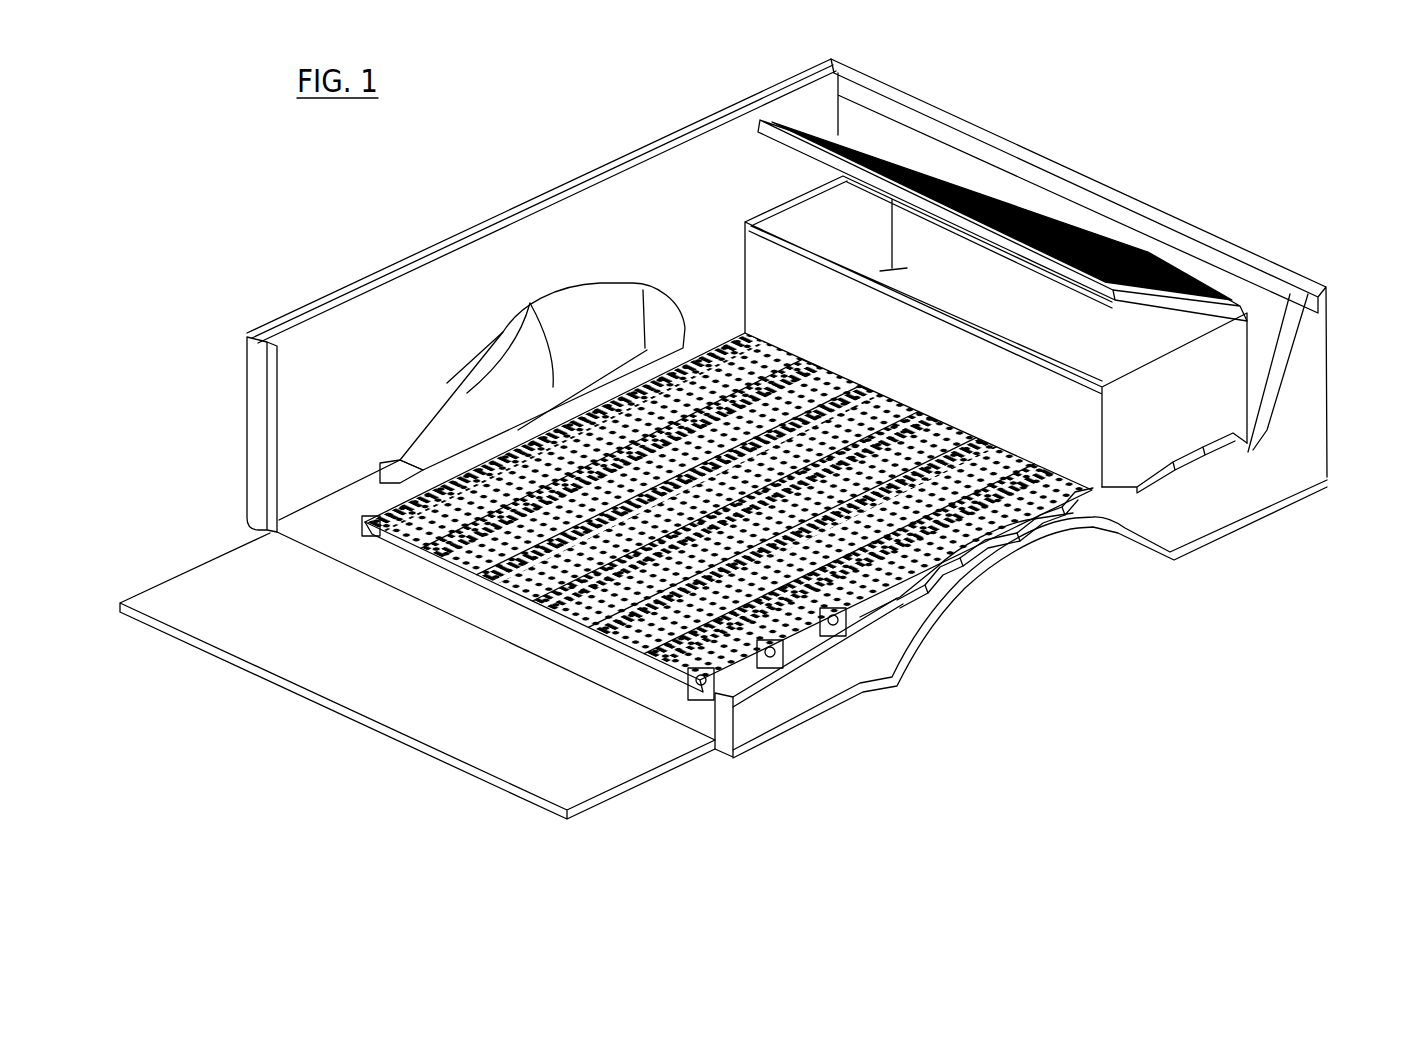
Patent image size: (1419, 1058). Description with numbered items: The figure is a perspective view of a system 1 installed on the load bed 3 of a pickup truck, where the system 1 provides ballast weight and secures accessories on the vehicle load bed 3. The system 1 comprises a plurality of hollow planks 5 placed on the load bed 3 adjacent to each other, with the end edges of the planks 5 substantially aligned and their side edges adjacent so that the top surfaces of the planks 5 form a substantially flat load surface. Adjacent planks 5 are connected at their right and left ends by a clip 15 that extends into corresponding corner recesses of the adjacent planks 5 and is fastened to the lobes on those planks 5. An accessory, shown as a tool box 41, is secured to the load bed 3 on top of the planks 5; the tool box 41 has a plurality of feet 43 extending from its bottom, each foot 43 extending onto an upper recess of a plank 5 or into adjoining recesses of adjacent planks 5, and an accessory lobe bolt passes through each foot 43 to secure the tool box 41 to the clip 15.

The system 1 is at (683, 683).
The vehicle load bed 3 is at (317, 523).
The hollow planks 5 is at (527, 608).
The clip 15 is at (418, 481).
The tool box 41 is at (1213, 383).
The feet 43 is at (1192, 465).